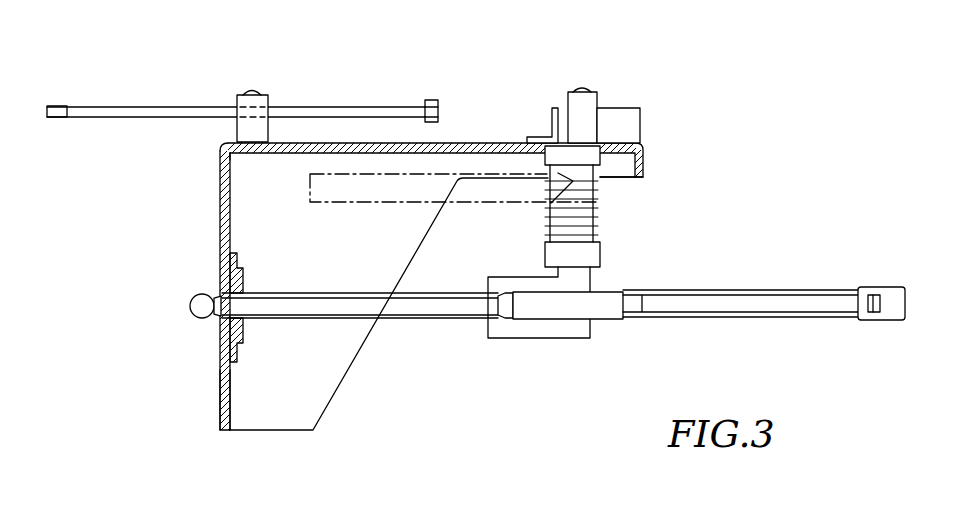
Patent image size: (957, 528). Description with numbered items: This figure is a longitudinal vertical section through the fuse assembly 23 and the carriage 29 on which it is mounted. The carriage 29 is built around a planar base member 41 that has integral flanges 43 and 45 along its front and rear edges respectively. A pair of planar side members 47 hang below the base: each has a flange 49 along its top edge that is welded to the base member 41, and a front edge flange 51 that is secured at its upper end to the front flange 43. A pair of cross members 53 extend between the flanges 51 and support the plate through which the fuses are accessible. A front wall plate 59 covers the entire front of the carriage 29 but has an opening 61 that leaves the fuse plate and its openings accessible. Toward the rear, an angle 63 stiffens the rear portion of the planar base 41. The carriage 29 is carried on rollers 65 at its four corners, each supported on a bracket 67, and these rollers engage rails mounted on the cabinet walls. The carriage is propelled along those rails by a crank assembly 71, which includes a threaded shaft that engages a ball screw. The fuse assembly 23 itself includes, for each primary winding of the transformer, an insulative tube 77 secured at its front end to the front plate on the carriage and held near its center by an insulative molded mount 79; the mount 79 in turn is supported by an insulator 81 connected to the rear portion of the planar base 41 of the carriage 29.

The fuse assembly 23 is at (708, 265).
The carriage 29 is at (496, 118).
The planar base member 41 is at (478, 141).
The front flange 43 is at (221, 162).
The rear flange 45 is at (641, 166).
The planar side member 47 is at (290, 432).
The top edge flange 49 is at (292, 155).
The front edge flange 51 is at (220, 400).
The cross member 53 is at (244, 352).
The front wall plate 59 is at (222, 229).
The opening 61 is at (222, 268).
The angle 63 is at (550, 115).
The roller 65 is at (250, 91).
The bracket 67 is at (243, 126).
The crank assembly 71 is at (174, 88).
The insulative tube 77 is at (771, 290).
The insulative molded mount 79 is at (599, 280).
The insulator 81 is at (602, 203).